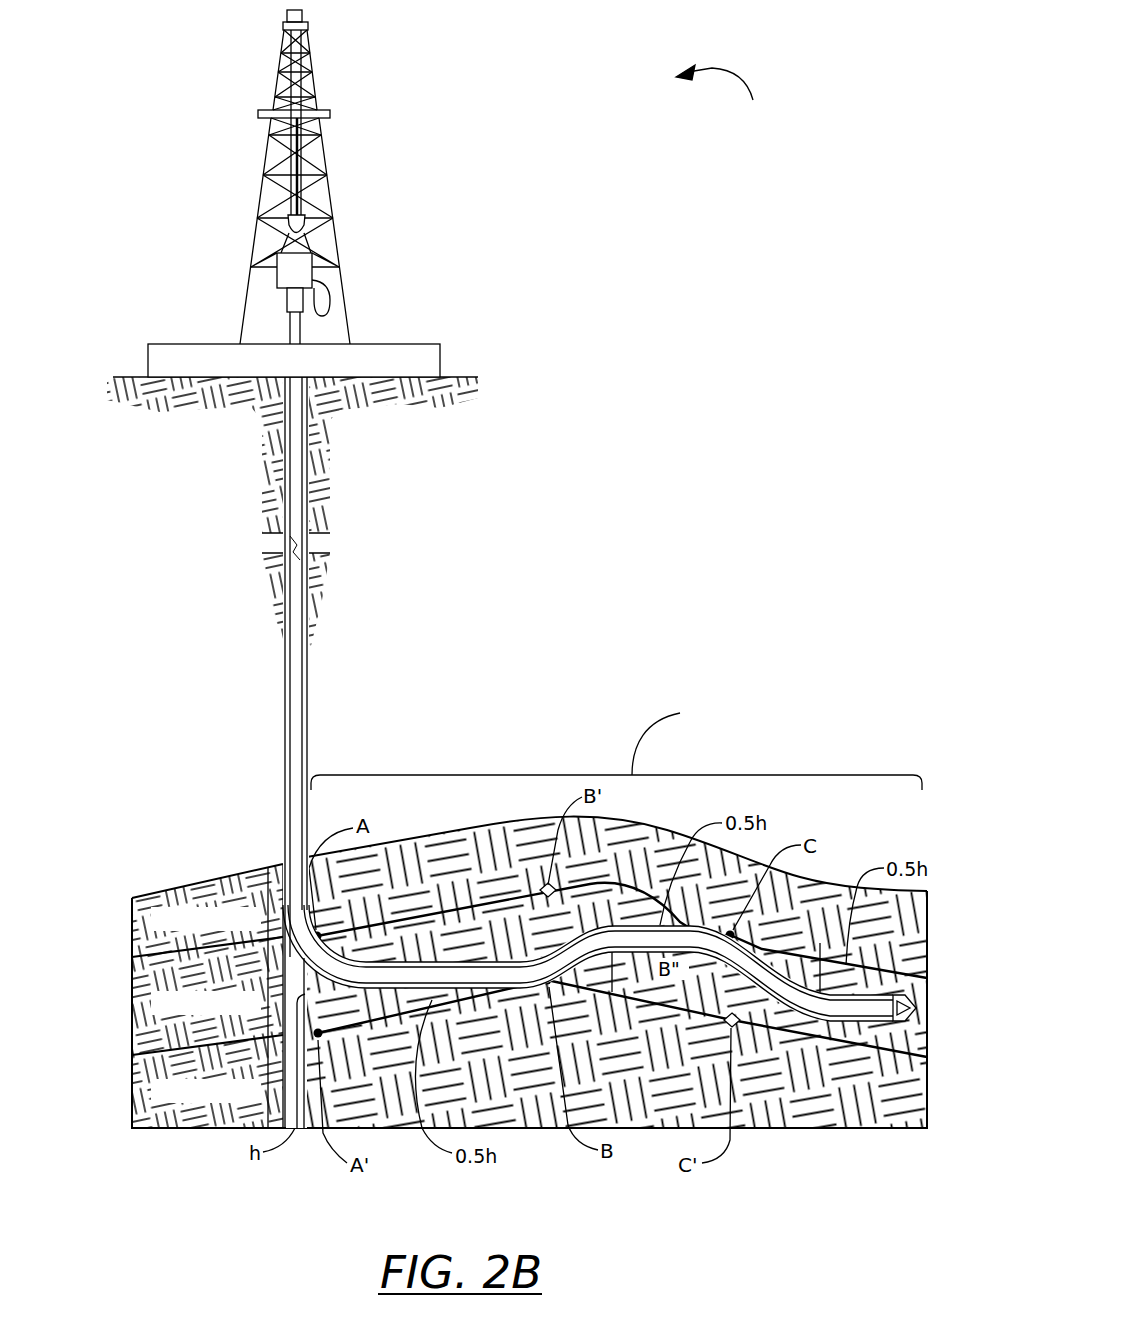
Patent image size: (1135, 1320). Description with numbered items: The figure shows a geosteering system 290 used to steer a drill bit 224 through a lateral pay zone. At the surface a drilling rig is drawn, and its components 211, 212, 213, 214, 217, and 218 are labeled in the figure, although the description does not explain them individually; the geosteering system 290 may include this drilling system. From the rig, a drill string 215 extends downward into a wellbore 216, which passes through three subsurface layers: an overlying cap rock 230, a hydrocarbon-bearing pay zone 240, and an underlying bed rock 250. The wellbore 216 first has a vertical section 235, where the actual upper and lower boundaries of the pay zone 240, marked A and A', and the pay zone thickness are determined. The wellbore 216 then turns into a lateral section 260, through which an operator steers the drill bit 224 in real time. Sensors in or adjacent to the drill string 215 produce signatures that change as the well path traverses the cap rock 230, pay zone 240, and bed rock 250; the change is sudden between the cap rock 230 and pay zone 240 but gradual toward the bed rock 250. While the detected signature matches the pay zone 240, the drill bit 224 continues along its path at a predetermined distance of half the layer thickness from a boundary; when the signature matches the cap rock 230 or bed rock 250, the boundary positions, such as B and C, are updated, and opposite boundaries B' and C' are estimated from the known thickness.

The top drive 211 is at (277, 275).
The derrick 212 is at (337, 239).
The traveling block 213 is at (270, 231).
The drill pipe 214 is at (284, 300).
The drill string 215 is at (285, 693).
The wellbore 216 is at (297, 503).
The drilling line 217 is at (314, 158).
The hose 218 is at (330, 291).
The drill bit 224 is at (885, 1026).
The cap rock 230 is at (214, 885).
The vertical section 235 is at (132, 941).
The pay zone 240 is at (132, 990).
The bed rock 250 is at (222, 1128).
The lateral section 260 is at (616, 744).
The geosteering system 290 is at (745, 133).